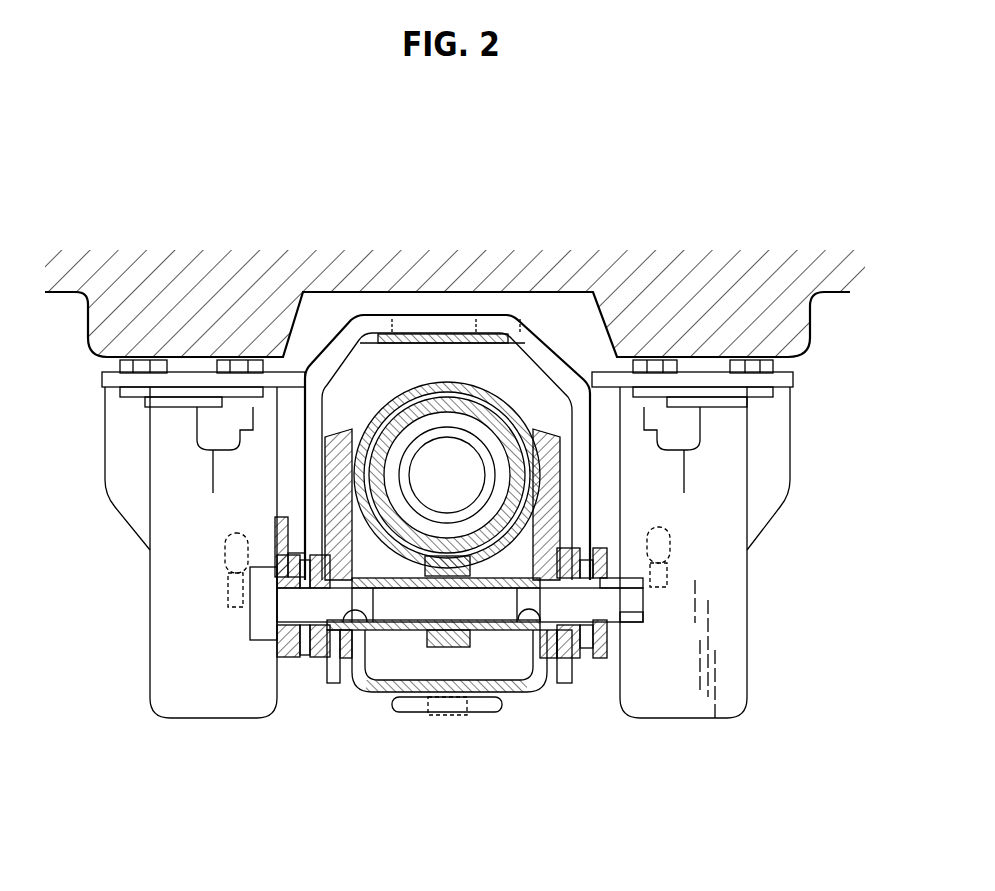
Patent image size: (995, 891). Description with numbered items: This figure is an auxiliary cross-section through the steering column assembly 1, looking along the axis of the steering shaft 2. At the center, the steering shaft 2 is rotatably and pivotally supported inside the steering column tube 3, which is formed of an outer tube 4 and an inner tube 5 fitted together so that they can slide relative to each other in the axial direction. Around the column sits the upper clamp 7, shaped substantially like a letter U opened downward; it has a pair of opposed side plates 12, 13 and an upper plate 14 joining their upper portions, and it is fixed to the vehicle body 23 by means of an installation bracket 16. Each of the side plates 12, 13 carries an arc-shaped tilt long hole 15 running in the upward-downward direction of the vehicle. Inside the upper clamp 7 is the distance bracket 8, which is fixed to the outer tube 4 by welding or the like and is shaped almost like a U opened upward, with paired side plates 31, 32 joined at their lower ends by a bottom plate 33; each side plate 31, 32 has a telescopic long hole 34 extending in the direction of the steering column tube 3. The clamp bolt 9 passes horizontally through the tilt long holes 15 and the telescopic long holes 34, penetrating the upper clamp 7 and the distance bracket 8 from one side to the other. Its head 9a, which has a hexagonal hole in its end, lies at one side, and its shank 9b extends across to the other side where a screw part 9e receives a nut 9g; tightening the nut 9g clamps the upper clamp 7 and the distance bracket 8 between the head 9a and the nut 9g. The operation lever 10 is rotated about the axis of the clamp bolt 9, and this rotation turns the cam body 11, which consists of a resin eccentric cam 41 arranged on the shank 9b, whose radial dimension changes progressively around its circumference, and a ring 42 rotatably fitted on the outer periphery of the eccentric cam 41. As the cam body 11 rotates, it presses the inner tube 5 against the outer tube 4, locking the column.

The steering column assembly 1 is at (553, 310).
The steering shaft 2 is at (492, 436).
The steering column tube 3 is at (382, 402).
The outer tube 4 is at (437, 392).
The inner tube 5 is at (470, 400).
The upper clamp 7 is at (471, 336).
The distance bracket 8 is at (549, 697).
The clamp bolt 9 is at (233, 626).
The head 9a is at (268, 640).
The shank 9b is at (278, 657).
The screw part 9e is at (630, 614).
The nut 9g is at (620, 583).
The operation lever 10 is at (278, 512).
The cam body 11 is at (397, 642).
The side plate 12 is at (330, 684).
The side plate 13 is at (567, 684).
The upper plate 14 is at (432, 337).
The tilt long hole 15 is at (272, 562).
The installation bracket 16 is at (577, 340).
The vehicle body 23 is at (800, 323).
The side plate 31 is at (348, 447).
The side plate 32 is at (548, 452).
The bottom plate 33 is at (520, 694).
The telescopic long hole 34 is at (345, 660).
The eccentric cam 41 is at (415, 632).
The ring 42 is at (445, 648).